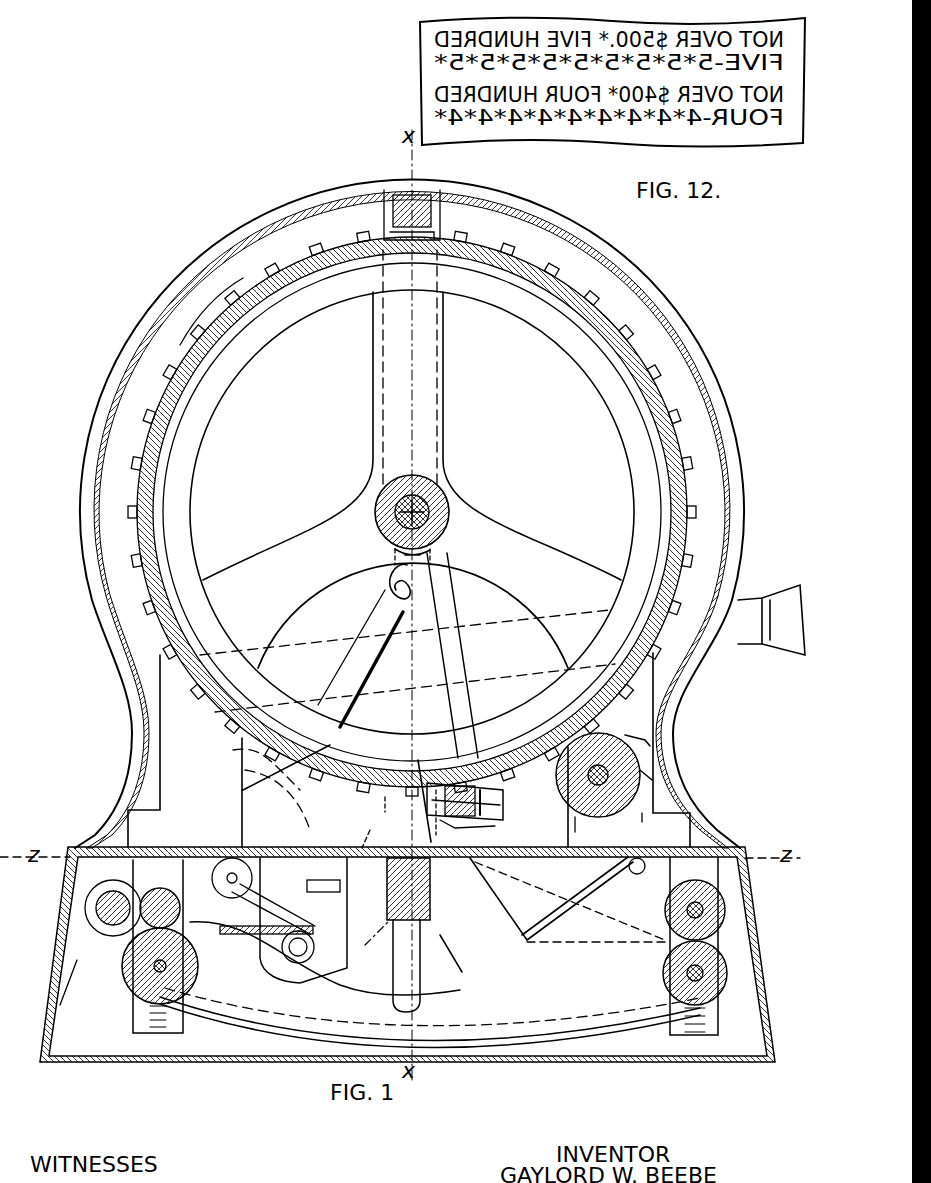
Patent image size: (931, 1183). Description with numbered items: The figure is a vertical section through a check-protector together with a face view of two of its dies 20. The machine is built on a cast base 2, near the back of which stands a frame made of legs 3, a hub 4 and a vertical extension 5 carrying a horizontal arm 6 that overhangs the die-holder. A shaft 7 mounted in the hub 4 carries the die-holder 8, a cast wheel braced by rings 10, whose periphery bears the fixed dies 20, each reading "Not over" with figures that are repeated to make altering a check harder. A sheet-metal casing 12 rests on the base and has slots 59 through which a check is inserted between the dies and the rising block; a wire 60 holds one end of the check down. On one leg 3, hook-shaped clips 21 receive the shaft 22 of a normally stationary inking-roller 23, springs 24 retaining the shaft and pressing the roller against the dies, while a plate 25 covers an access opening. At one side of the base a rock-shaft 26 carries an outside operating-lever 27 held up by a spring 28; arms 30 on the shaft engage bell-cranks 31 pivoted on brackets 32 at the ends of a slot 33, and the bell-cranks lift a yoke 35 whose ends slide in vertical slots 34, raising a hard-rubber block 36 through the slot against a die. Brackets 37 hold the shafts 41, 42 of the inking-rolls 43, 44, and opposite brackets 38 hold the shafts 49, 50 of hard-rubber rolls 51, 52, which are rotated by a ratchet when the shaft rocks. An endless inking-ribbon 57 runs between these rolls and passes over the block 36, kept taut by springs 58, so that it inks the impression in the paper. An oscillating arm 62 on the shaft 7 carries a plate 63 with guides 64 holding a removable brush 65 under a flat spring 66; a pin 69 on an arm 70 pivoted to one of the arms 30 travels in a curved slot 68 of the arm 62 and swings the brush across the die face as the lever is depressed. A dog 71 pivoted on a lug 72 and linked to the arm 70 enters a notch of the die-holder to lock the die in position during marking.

In FIG. 1, the base 2 is at (757, 897).
In FIG. 1, the legs 3 is at (411, 608).
In FIG. 1, the hub 4 is at (433, 487).
In FIG. 1, the vertical extension 5 is at (427, 357).
In FIG. 1, the horizontal arm 6 is at (432, 200).
In FIG. 1, the shaft 7 is at (430, 512).
In FIG. 1, the die-holder 8 is at (203, 350).
In FIG. 1, the rings 10 is at (173, 497).
In FIG. 1, the sheet-metal casing 12 is at (632, 284).
In FIG. 12, the fixed dies 20 is at (437, 80).
In FIG. 1, the fixed dies 20 is at (287, 268).
In FIG. 1, the hook-shaped clips 21 is at (644, 829).
In FIG. 1, the shaft 22 is at (600, 770).
In FIG. 1, the inking-roller 23 is at (591, 831).
In FIG. 1, the springs 24 is at (640, 746).
In FIG. 1, the plate 25 is at (680, 752).
In FIG. 1, the rock-shaft 26 is at (97, 905).
In FIG. 1, the operating-lever 27 is at (740, 602).
In FIG. 1, the spring 28 is at (72, 958).
In FIG. 1, the arms 30 is at (160, 835).
In FIG. 1, the bell-cranks 31 is at (237, 955).
In FIG. 1, the brackets 32 is at (305, 972).
In FIG. 1, the slot 33 is at (432, 842).
In FIG. 1, the vertical slots 34 is at (462, 970).
In FIG. 1, the yoke 35 is at (428, 926).
In FIG. 1, the block 36 is at (452, 878).
In FIG. 1, the brackets 37 is at (716, 1028).
In FIG. 1, the brackets 38 is at (138, 1015).
In FIG. 1, the shaft 41 is at (693, 910).
In FIG. 1, the shaft 42 is at (693, 973).
In FIG. 1, the inking-roll 43 is at (716, 914).
In FIG. 1, the inking-roll 44 is at (722, 980).
In FIG. 1, the shaft 49 is at (202, 878).
In FIG. 1, the shaft 50 is at (150, 978).
In FIG. 1, the hard-rubber roll 51 is at (172, 906).
In FIG. 1, the hard-rubber roll 52 is at (190, 996).
In FIG. 1, the endless inking-ribbon 57 is at (330, 940).
In FIG. 1, the springs 58 is at (560, 920).
In FIG. 1, the slots 59 is at (275, 847).
In FIG. 1, the wire 60 is at (448, 840).
In FIG. 1, the oscillating arm 62 is at (453, 710).
In FIG. 1, the plate 63 is at (381, 805).
In FIG. 1, the guides 64 is at (518, 800).
In FIG. 1, the brush 65 is at (470, 792).
In FIG. 1, the flat spring 66 is at (415, 790).
In FIG. 1, the curved slot 68 is at (407, 577).
In FIG. 1, the pin 69 is at (417, 567).
In FIG. 1, the arm 70 is at (358, 676).
In FIG. 1, the dog 71 is at (325, 720).
In FIG. 1, the lug 72 is at (233, 750).